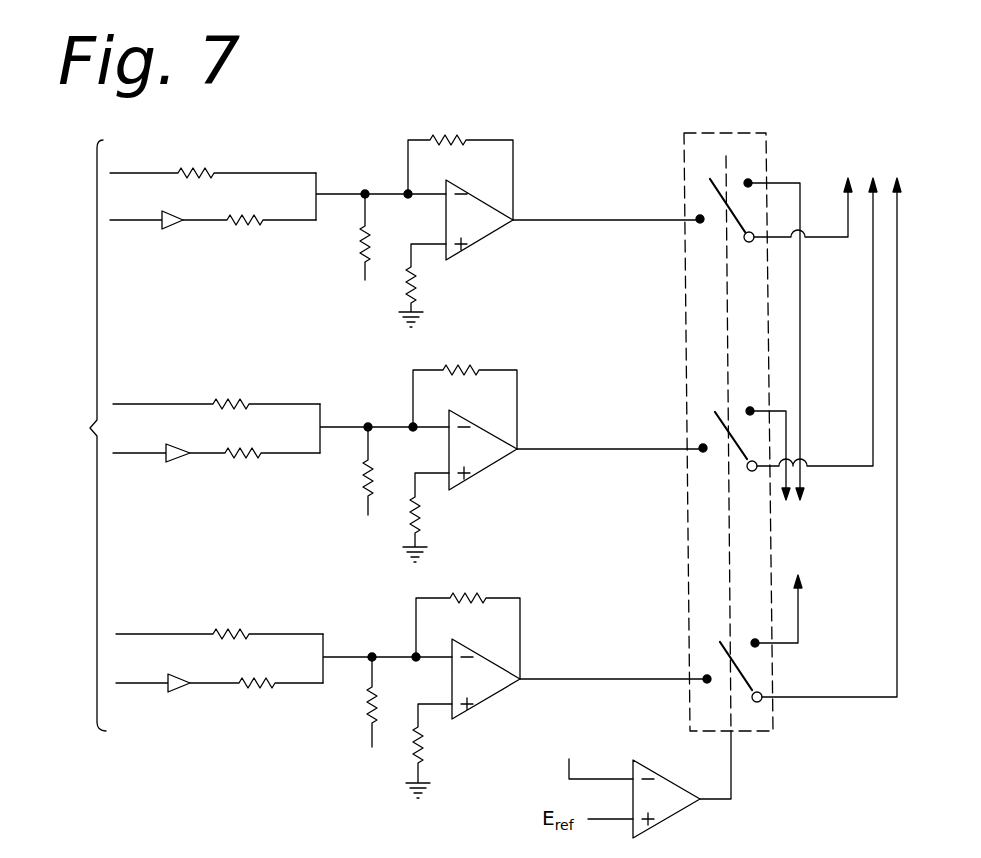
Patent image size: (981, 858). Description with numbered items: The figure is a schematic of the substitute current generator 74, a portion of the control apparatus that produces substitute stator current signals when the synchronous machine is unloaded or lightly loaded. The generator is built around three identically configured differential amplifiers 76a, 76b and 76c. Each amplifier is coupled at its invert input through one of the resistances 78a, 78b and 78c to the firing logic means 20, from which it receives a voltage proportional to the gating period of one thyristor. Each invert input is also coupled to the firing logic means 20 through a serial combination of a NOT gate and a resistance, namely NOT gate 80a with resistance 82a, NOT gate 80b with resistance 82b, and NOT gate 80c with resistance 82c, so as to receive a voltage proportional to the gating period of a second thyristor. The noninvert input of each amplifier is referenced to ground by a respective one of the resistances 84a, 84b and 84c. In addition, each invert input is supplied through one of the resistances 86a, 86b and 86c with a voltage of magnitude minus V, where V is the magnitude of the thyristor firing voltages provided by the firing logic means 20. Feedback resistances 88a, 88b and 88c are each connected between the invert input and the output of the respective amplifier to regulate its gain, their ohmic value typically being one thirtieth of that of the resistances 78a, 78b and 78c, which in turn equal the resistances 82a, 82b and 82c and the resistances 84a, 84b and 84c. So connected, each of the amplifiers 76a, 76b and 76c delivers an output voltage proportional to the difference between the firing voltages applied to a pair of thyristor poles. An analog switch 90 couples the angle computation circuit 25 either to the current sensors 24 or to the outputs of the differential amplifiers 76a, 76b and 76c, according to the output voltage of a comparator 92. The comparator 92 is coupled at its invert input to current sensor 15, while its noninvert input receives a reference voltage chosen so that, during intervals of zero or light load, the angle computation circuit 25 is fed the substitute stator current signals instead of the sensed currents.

The firing logic means 20 is at (57, 435).
The substitute current generator 74 is at (220, 796).
The differential amplifier 76a is at (493, 228).
The differential amplifier 76b is at (500, 460).
The differential amplifier 76c is at (487, 695).
The resistance 78a is at (196, 170).
The resistance 78b is at (228, 400).
The resistance 78c is at (236, 630).
The NOT gate 80a is at (173, 229).
The NOT gate 80b is at (176, 462).
The NOT gate 80c is at (176, 692).
The resistance 82a is at (243, 226).
The resistance 82b is at (243, 459).
The resistance 82c is at (255, 689).
The resistance 84a is at (414, 290).
The resistance 84b is at (418, 518).
The resistance 84c is at (420, 745).
The resistance 86a is at (360, 236).
The resistance 86b is at (364, 472).
The resistance 86c is at (368, 702).
The feedback resistance 88a is at (452, 136).
The feedback resistance 88b is at (468, 368).
The feedback resistance 88c is at (472, 596).
The analog switch 90 is at (695, 347).
The comparator 92 is at (675, 810).
The angle computation circuit 25 is at (827, 395).
The current sensors 24 is at (817, 413).
The current sensor 15 is at (576, 740).